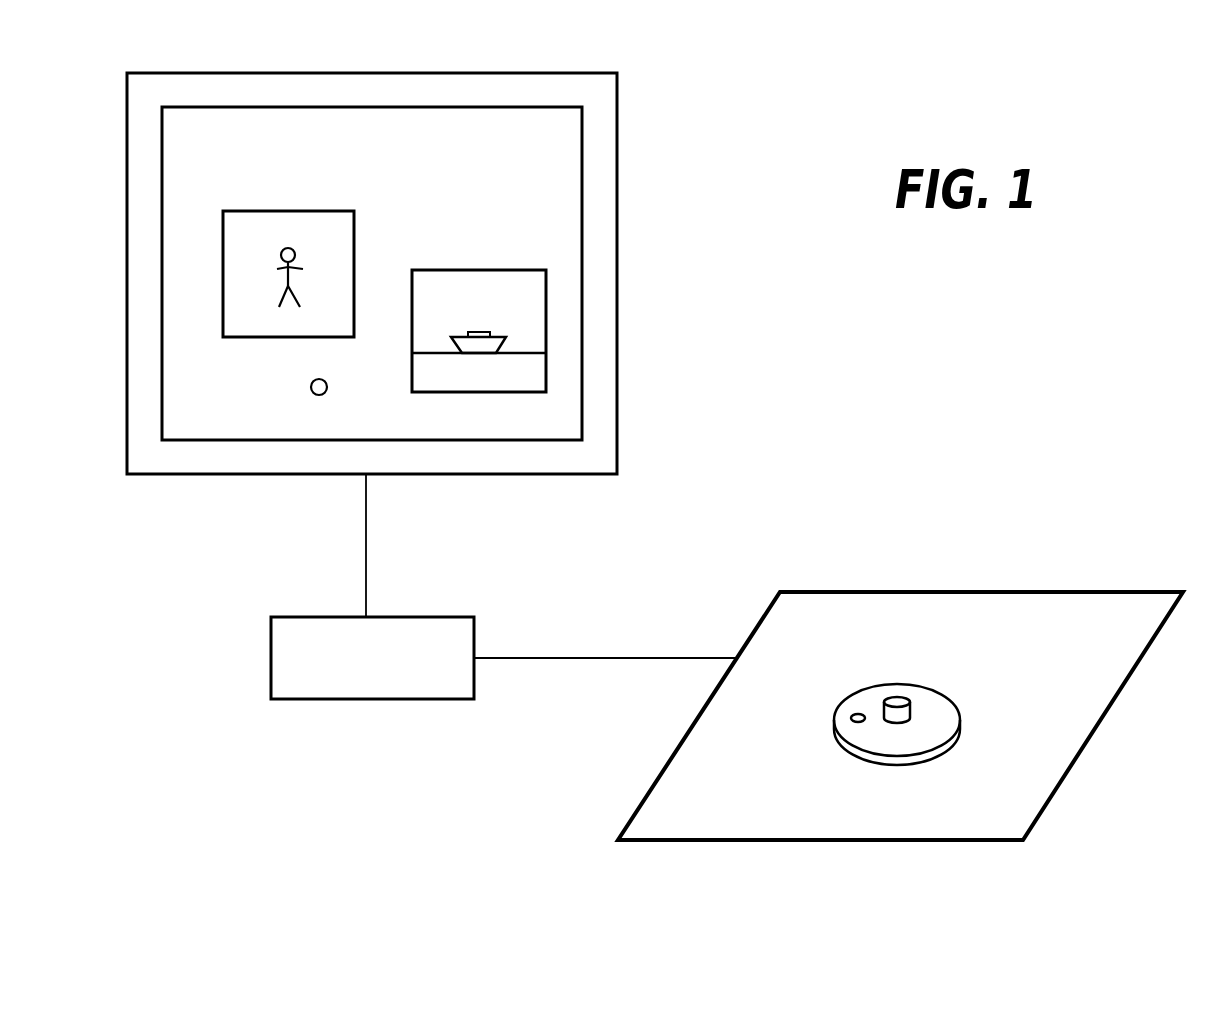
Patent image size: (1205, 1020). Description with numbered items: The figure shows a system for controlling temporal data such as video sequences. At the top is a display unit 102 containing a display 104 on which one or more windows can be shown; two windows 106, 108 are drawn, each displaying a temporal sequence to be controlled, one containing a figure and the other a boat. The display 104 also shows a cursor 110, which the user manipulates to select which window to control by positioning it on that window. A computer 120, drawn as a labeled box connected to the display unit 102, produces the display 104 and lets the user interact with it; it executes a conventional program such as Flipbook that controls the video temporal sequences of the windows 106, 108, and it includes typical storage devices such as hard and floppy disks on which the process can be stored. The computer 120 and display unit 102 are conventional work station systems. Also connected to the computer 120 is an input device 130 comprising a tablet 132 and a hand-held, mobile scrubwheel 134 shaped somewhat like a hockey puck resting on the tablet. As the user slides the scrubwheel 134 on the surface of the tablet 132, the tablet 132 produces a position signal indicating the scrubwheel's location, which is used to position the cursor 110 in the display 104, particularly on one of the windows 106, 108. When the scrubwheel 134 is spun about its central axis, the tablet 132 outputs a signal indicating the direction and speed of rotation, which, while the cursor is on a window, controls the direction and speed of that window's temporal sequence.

The display unit 102 is at (617, 185).
The display 104 is at (522, 107).
The window 106 is at (307, 210).
The window 108 is at (482, 268).
The cursor 110 is at (311, 387).
The computer 120 is at (316, 700).
The input device 130 is at (572, 881).
The tablet 132 is at (897, 592).
The scrubwheel 134 is at (957, 702).